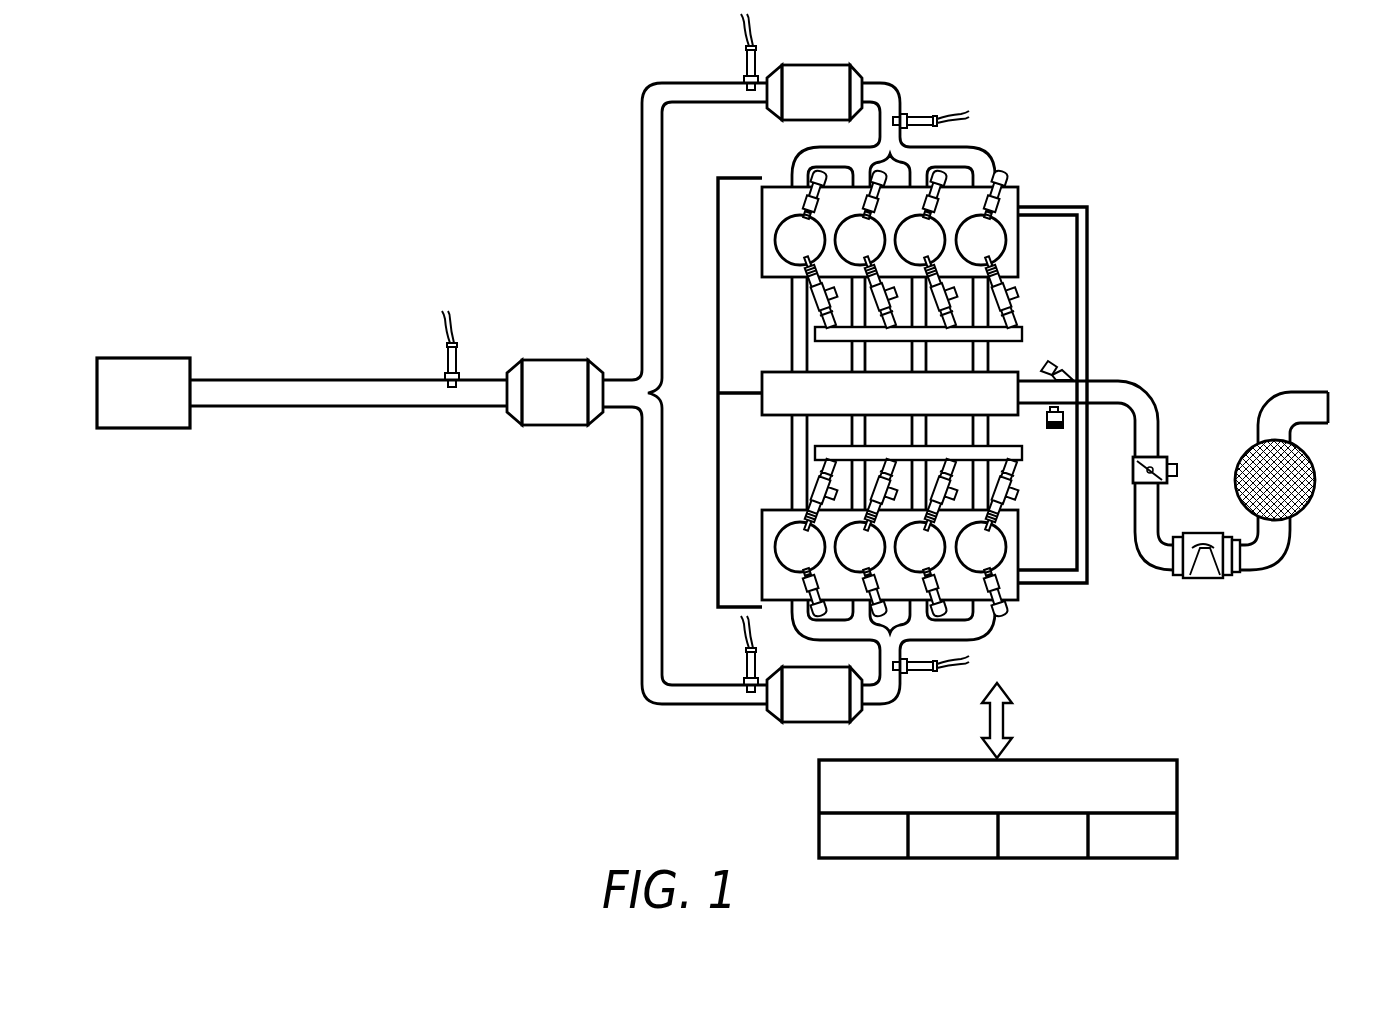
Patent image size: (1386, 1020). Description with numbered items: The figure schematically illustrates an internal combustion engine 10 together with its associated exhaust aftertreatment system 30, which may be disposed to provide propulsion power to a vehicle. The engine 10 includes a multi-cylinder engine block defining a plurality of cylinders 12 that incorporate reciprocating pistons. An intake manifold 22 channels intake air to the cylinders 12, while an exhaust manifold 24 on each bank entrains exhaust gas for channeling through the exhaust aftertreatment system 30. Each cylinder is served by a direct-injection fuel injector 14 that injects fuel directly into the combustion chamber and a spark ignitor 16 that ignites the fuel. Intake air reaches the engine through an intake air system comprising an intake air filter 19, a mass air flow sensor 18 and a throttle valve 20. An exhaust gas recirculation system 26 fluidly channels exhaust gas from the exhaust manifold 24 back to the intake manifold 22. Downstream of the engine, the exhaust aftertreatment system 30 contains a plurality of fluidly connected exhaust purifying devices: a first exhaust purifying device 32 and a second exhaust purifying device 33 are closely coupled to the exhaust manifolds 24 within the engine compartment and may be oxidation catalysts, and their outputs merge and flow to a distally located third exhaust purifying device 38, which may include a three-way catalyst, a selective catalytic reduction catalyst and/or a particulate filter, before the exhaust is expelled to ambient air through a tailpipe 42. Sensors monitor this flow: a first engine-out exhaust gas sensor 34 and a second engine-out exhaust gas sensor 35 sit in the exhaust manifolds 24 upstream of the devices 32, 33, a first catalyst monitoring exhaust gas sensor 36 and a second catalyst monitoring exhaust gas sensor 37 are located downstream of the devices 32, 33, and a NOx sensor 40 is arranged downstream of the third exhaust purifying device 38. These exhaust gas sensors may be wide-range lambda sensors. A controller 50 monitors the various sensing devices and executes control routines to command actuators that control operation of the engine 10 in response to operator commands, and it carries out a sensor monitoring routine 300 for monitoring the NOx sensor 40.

The internal combustion engine 10 is at (1216, 256).
The cylinders 12 is at (984, 238).
The direct-injection fuel injectors 14 is at (1017, 322).
The spark ignitors 16 is at (1013, 168).
The mass air flow (MAF) sensor 18 is at (1198, 537).
The intake air filter 19 is at (1315, 480).
The throttle valve 20 is at (1160, 457).
The intake manifold 22 is at (905, 408).
The exhaust manifold 24 is at (1020, 196).
The exhaust gas recirculation (EGR) system 26 is at (714, 409).
The exhaust aftertreatment system 30 is at (629, 68).
The first exhaust purifying device 32 is at (832, 108).
The second exhaust purifying device 33 is at (832, 710).
The first engine-out exhaust gas sensor 34 is at (918, 114).
The second engine-out exhaust gas sensor 35 is at (951, 655).
The first catalyst monitoring exhaust gas sensor 36 is at (745, 68).
The second catalyst monitoring exhaust gas sensor 37 is at (745, 672).
The third exhaust purifying device 38 is at (571, 409).
The NOx sensor 40 is at (445, 362).
The tailpipe 42 is at (159, 407).
The controller 50 is at (883, 802).
The sensor monitoring routine 300 is at (889, 852).